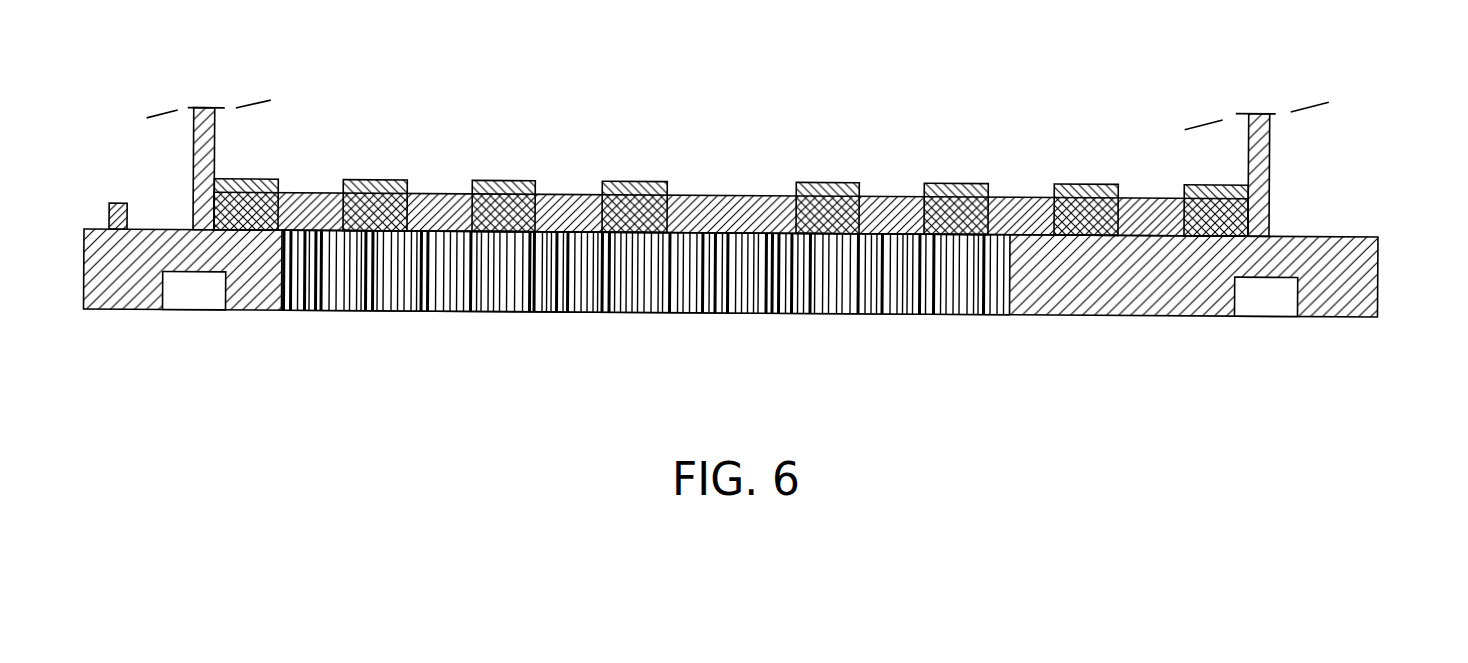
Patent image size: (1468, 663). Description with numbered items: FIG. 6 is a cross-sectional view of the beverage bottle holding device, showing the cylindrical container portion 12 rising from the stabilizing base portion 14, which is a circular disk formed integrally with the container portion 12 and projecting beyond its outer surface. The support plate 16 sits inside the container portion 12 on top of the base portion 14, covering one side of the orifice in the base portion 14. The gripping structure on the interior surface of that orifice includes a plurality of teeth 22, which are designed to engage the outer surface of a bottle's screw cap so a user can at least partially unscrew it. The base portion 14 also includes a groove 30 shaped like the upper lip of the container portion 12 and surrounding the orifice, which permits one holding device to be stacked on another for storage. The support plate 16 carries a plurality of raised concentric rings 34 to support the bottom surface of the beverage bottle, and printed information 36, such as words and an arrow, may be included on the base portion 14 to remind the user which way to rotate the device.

The cylindrical container portion 12 is at (1263, 157).
The stabilizing base portion 14 is at (1348, 278).
The support plate 16 is at (725, 202).
The teeth 22 is at (923, 287).
The groove 30 is at (193, 290).
The raised concentric rings 34 is at (258, 188).
The printed information 36 is at (125, 165).